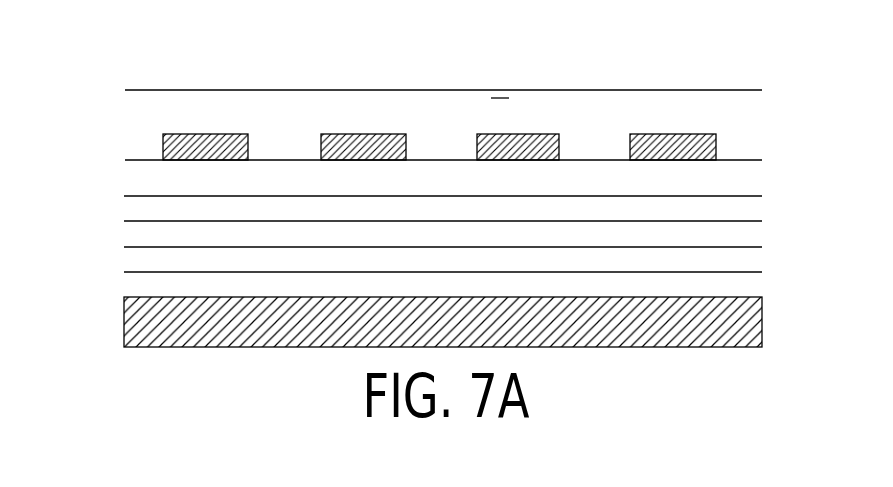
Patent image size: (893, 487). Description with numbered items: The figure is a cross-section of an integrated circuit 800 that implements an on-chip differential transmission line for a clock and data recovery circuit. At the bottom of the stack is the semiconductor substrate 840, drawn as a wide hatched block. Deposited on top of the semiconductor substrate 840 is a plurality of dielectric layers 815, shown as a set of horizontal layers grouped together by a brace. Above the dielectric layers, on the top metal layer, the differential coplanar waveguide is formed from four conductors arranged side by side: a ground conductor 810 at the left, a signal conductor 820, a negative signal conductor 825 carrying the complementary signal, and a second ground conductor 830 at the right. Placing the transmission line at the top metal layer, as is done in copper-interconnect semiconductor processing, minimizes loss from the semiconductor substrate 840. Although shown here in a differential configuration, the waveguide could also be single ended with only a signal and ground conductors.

The integrated circuit 800 is at (461, 41).
The ground conductor 810 is at (235, 133).
The signal conductor 820 is at (381, 134).
The negative signal conductor 825 is at (547, 134).
The ground conductor 830 is at (702, 134).
The dielectric layers 815 is at (120, 193).
The semiconductor substrate 840 is at (464, 334).